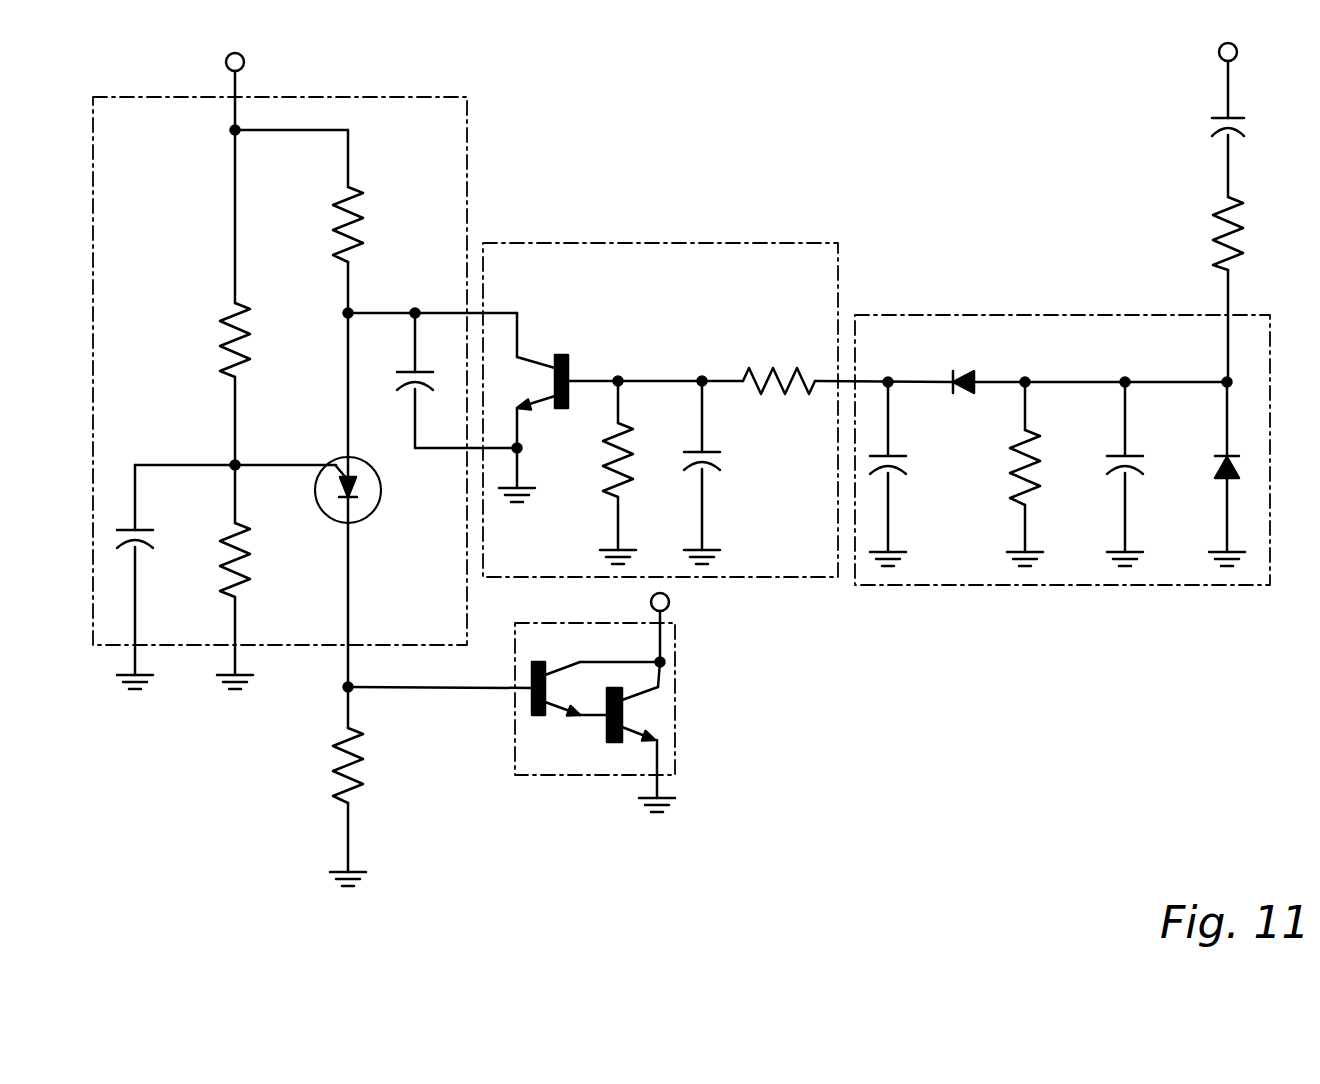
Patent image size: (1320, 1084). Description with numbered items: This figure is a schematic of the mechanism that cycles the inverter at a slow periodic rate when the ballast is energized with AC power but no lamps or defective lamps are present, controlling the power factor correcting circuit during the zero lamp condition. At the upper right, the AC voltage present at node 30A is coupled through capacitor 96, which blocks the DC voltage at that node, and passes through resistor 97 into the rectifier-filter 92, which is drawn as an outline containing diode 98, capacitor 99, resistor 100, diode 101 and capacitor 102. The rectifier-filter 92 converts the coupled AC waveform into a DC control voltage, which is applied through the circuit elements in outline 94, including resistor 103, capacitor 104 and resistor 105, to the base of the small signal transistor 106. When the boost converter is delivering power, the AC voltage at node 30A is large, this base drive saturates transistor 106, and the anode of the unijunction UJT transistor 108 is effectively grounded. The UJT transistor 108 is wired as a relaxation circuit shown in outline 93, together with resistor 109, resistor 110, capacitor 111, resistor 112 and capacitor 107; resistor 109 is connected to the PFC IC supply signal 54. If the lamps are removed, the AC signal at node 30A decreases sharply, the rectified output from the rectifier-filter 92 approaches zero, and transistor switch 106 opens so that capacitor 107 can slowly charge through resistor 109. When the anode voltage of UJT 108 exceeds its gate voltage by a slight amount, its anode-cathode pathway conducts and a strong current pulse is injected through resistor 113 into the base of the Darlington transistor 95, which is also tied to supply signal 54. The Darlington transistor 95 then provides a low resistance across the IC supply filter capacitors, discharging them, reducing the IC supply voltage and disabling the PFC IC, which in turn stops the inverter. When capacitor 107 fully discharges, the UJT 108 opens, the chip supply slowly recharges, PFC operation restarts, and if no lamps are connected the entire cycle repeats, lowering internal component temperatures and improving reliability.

The node 30A is at (1205, 80).
The PFC IC supply signal 54 is at (447, 356).
The rectifier-filter 92 is at (892, 344).
The relaxation circuit outline 93 is at (137, 126).
The base drive circuit elements 94 is at (522, 273).
The Darlington transistor 95 is at (554, 651).
The capacitor 96 is at (1237, 157).
The resistor 97 is at (1239, 289).
The diode 98 is at (1236, 474).
The capacitor 99 is at (1133, 474).
The resistor 100 is at (1040, 474).
The diode 101 is at (962, 396).
The capacitor 102 is at (904, 474).
The resistor 103 is at (779, 396).
The capacitor 104 is at (717, 472).
The resistor 105 is at (633, 472).
The small signal transistor 106 is at (630, 400).
The capacitor 107 is at (442, 380).
The unijunction UJT transistor 108 is at (340, 506).
The resistor 109 is at (338, 238).
The resistor 110 is at (250, 354).
The capacitor 111 is at (150, 577).
The resistor 112 is at (250, 573).
The resistor 113 is at (330, 781).